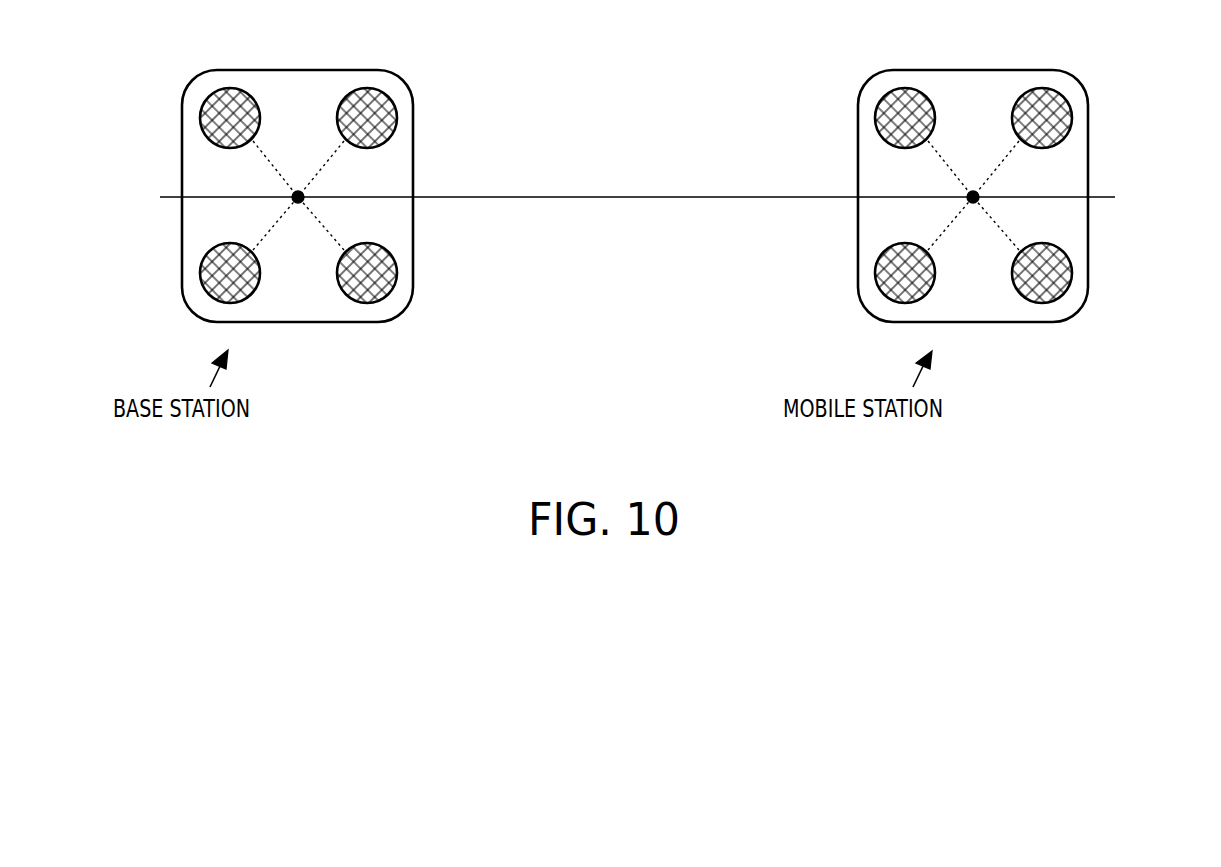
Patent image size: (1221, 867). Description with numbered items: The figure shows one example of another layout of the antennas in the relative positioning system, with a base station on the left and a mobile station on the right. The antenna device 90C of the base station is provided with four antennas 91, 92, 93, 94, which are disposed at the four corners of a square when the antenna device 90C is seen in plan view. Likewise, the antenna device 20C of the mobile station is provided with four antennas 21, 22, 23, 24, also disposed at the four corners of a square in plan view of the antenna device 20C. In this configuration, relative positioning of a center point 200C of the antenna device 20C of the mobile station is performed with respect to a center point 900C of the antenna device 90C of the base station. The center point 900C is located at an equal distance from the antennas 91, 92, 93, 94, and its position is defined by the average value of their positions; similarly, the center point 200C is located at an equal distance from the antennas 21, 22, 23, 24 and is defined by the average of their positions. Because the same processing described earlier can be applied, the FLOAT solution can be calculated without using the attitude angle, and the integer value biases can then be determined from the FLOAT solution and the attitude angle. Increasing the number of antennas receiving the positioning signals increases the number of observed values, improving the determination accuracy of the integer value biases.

The antenna device of the base station 90C is at (400, 55).
The center point 900C is at (216, 195).
The antenna 91 is at (200, 118).
The antenna 92 is at (200, 273).
The antenna 93 is at (397, 273).
The antenna 94 is at (397, 118).
The antenna device of the mobile station 20C is at (1075, 55).
The center point 200C is at (1055, 195).
The antenna 21 is at (875, 118).
The antenna 22 is at (875, 273).
The antenna 23 is at (1072, 273).
The antenna 24 is at (1072, 118).